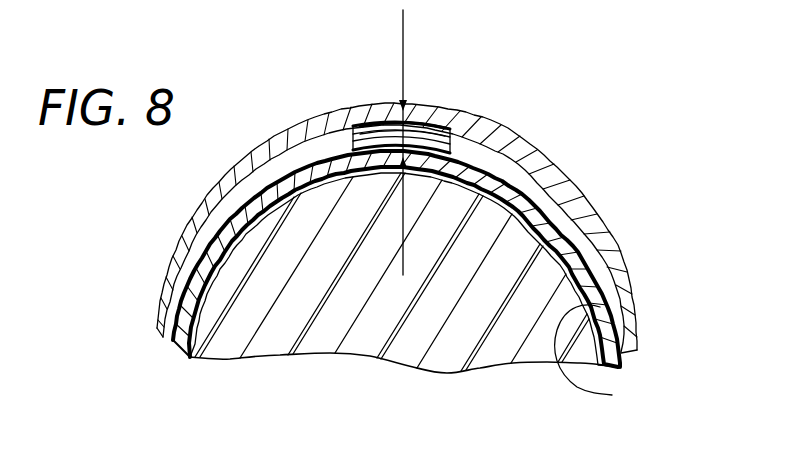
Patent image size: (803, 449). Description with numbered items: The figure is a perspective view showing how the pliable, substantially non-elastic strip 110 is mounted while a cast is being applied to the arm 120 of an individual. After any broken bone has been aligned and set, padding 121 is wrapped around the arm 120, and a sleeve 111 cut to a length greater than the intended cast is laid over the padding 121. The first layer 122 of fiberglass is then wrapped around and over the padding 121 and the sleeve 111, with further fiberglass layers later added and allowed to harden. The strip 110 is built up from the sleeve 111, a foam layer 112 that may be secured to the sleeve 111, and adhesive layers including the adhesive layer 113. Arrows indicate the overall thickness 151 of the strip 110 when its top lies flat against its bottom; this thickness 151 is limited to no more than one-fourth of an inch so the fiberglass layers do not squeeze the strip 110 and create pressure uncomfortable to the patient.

The pliable substantially non-elastic strip 110 is at (338, 134).
The sleeve 111 is at (416, 109).
The foam layer 112 is at (472, 133).
The adhesive layer 113 is at (476, 145).
The arm 120 is at (367, 374).
The padding 121 is at (604, 359).
The first layer of fiberglass 122 is at (623, 283).
The overall thickness 151 is at (403, 30).